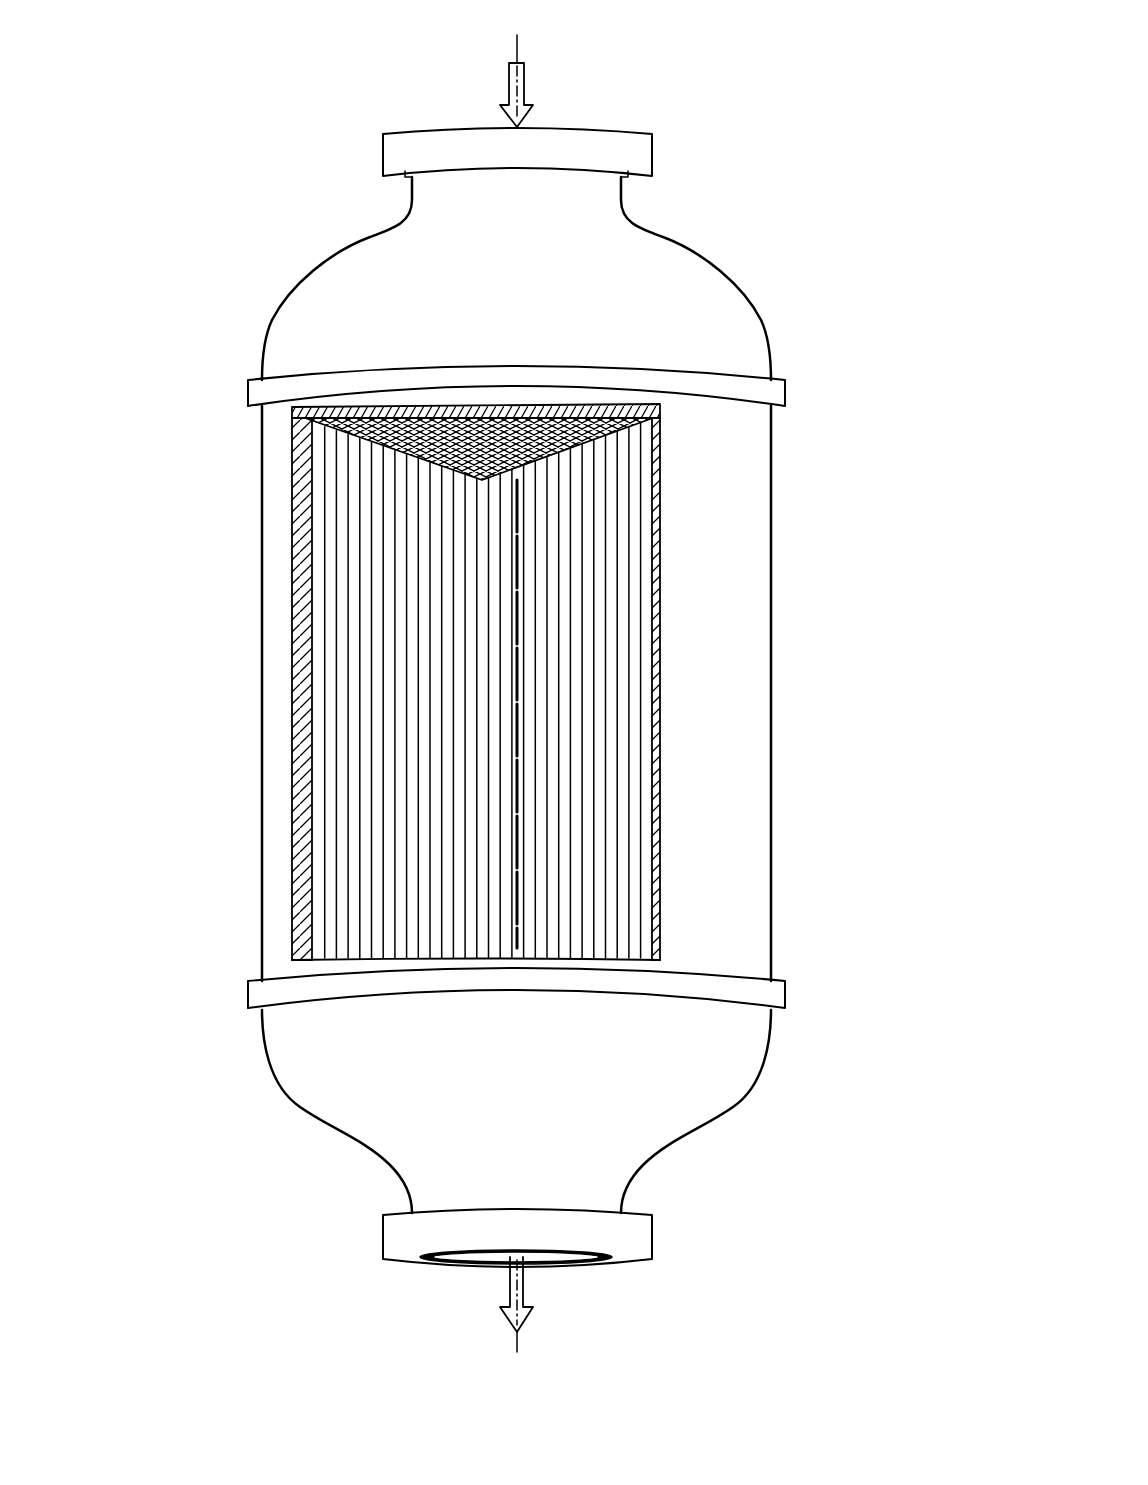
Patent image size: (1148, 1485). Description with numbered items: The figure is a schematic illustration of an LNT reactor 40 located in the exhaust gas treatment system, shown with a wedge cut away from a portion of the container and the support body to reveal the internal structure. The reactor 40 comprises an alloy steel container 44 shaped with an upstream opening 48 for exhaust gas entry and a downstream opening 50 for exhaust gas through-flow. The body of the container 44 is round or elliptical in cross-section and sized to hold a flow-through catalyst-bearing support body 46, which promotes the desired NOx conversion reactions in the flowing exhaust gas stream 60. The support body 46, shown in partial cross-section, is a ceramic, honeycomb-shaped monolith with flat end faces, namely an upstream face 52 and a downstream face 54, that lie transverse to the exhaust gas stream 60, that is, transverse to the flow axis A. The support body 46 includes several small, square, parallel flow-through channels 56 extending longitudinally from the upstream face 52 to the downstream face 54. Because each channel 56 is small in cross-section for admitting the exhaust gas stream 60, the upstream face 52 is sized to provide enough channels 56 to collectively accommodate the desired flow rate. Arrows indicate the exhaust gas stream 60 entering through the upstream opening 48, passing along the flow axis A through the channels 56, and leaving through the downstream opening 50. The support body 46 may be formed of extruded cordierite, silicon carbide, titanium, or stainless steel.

The LNT reactor 40 is at (211, 256).
The alloy steel container 44 is at (315, 273).
The catalyst-bearing support body 46 is at (300, 630).
The upstream opening 48 is at (418, 126).
The downstream opening 50 is at (457, 1267).
The upstream face 52 is at (362, 418).
The downstream face 54 is at (373, 957).
The flow-through channels 56 is at (355, 832).
The exhaust gas stream 60 is at (523, 87).
The flow axis A is at (517, 654).